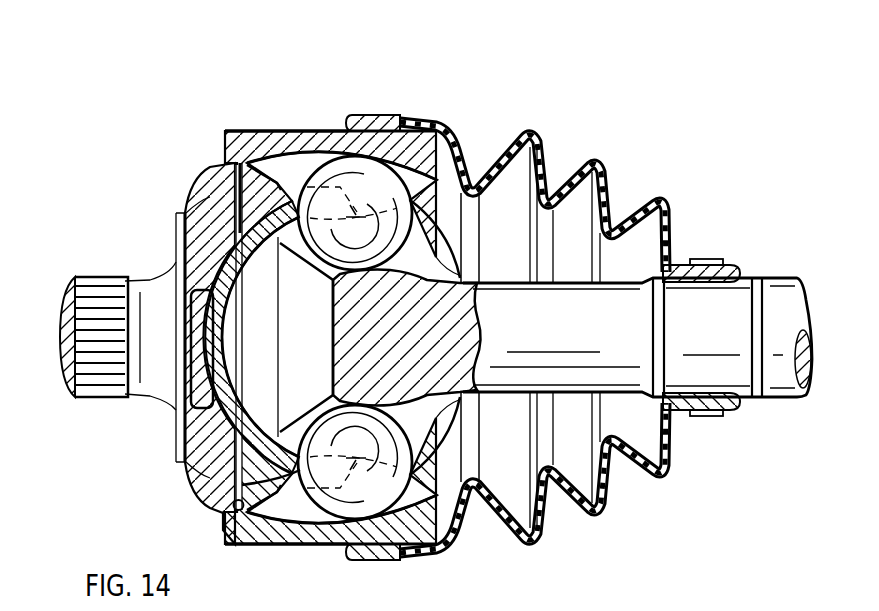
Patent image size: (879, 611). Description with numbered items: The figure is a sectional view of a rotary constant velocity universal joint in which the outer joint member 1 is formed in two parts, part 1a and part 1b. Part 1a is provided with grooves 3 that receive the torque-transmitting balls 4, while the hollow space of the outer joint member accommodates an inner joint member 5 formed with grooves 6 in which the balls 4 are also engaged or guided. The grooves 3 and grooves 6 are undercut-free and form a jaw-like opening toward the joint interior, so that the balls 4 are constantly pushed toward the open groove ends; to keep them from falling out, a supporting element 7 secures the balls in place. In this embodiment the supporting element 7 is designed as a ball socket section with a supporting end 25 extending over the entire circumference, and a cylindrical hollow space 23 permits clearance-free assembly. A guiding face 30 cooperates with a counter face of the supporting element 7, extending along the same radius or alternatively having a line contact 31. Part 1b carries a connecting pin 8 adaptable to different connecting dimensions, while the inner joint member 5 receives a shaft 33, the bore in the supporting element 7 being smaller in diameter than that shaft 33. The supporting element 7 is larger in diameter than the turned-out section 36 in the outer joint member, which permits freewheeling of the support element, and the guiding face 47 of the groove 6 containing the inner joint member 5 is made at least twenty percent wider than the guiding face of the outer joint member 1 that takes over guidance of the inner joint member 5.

The outer joint member 1 is at (326, 121).
The part of outer joint member 1a is at (287, 145).
The part of outer joint member 1b is at (200, 183).
The grooves 3 is at (407, 315).
The torque-transmitting balls 4 is at (370, 175).
The inner joint member 5 is at (441, 190).
The grooves 6 is at (441, 257).
The supporting element 7 is at (215, 160).
The connecting pin 8 is at (100, 272).
The cylindrical hollow space 23 is at (238, 542).
The supporting end 25 is at (308, 476).
The guiding face 30 is at (190, 256).
The line contact 31 is at (213, 198).
The shaft 33 is at (571, 315).
The turned-out section 36 is at (283, 195).
The guiding face 47 is at (663, 198).